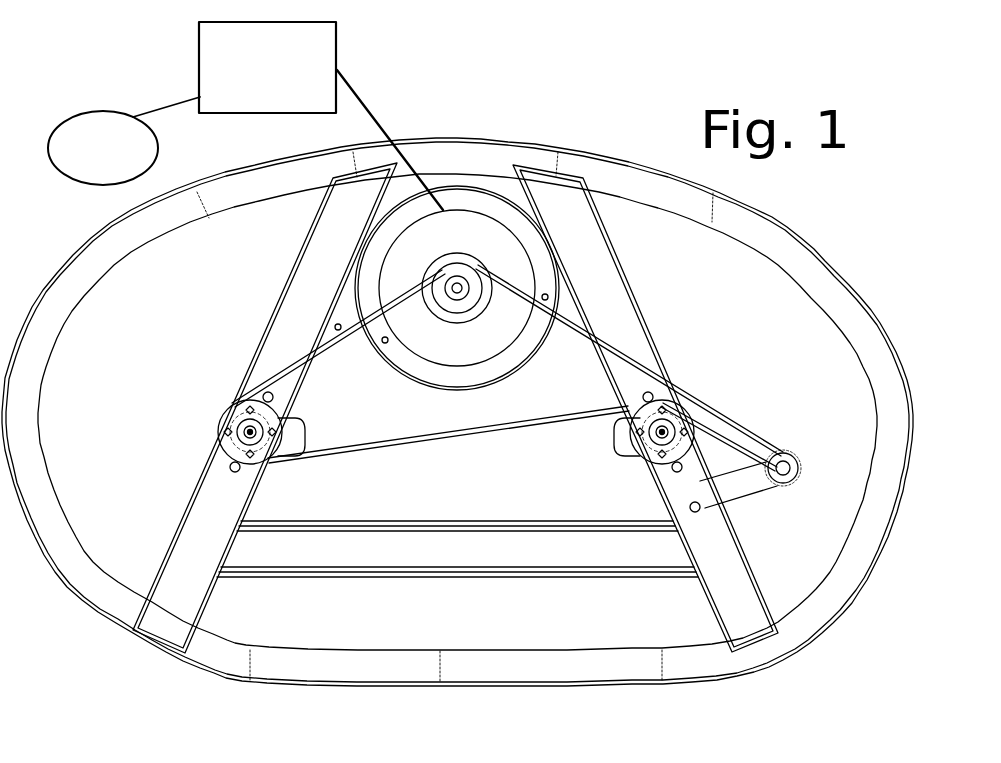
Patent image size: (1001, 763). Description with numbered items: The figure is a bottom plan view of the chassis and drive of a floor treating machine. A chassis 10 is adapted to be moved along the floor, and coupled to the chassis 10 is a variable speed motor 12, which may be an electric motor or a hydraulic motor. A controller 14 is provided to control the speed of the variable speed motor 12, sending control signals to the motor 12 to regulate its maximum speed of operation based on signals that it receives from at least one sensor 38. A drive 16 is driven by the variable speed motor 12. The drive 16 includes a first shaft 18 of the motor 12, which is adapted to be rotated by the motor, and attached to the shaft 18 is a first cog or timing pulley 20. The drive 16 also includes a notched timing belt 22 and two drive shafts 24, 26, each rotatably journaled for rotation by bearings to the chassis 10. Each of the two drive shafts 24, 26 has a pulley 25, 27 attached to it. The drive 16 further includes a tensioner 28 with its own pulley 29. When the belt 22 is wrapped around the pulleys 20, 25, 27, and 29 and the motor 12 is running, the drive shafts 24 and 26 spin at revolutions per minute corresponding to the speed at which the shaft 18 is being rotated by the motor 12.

The chassis 10 is at (832, 630).
The variable speed motor 12 is at (478, 238).
The controller 14 is at (200, 39).
The drive 16 is at (700, 368).
The first shaft 18 is at (452, 292).
The first cog or timing pulley 20 is at (483, 313).
The notched timing belt 22 is at (455, 447).
The drive shaft 24 is at (230, 423).
The pulley 25 is at (217, 448).
The drive shaft 26 is at (678, 423).
The pulley 27 is at (638, 457).
The tensioner 28 is at (752, 503).
The tensioner pulley 29 is at (798, 467).
The sensor 38 is at (82, 112).